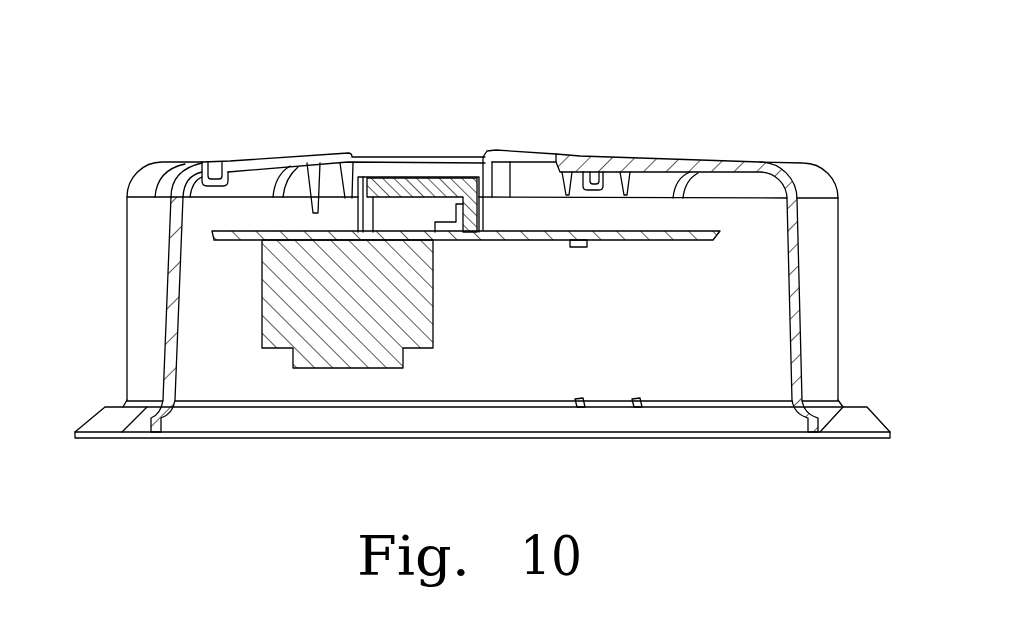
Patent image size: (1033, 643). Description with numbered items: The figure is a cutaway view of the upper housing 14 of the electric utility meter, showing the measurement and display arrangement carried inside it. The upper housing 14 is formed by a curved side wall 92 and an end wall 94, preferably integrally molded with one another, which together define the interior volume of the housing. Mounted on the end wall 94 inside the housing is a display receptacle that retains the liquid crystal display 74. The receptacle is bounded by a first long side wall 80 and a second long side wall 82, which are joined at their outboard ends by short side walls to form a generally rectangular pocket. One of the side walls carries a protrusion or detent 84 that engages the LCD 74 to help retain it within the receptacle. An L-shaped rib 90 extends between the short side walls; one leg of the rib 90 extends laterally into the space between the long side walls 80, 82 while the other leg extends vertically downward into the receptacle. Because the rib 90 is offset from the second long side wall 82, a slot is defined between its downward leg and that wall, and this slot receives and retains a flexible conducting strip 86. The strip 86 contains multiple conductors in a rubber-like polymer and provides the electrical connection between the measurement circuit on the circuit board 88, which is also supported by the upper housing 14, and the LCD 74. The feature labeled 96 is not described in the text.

The upper housing 14 is at (115, 273).
The liquid crystal display 74 is at (422, 178).
The first long side wall 80 is at (382, 198).
The second long side wall 82 is at (466, 218).
The detent 84 is at (403, 222).
The flexible conducting strip 86 is at (479, 203).
The circuit board 88 is at (640, 240).
The L-shaped rib 90 is at (443, 198).
The side wall 92 is at (830, 243).
The end wall 94 is at (724, 160).
The roof slab 96 is at (360, 158).